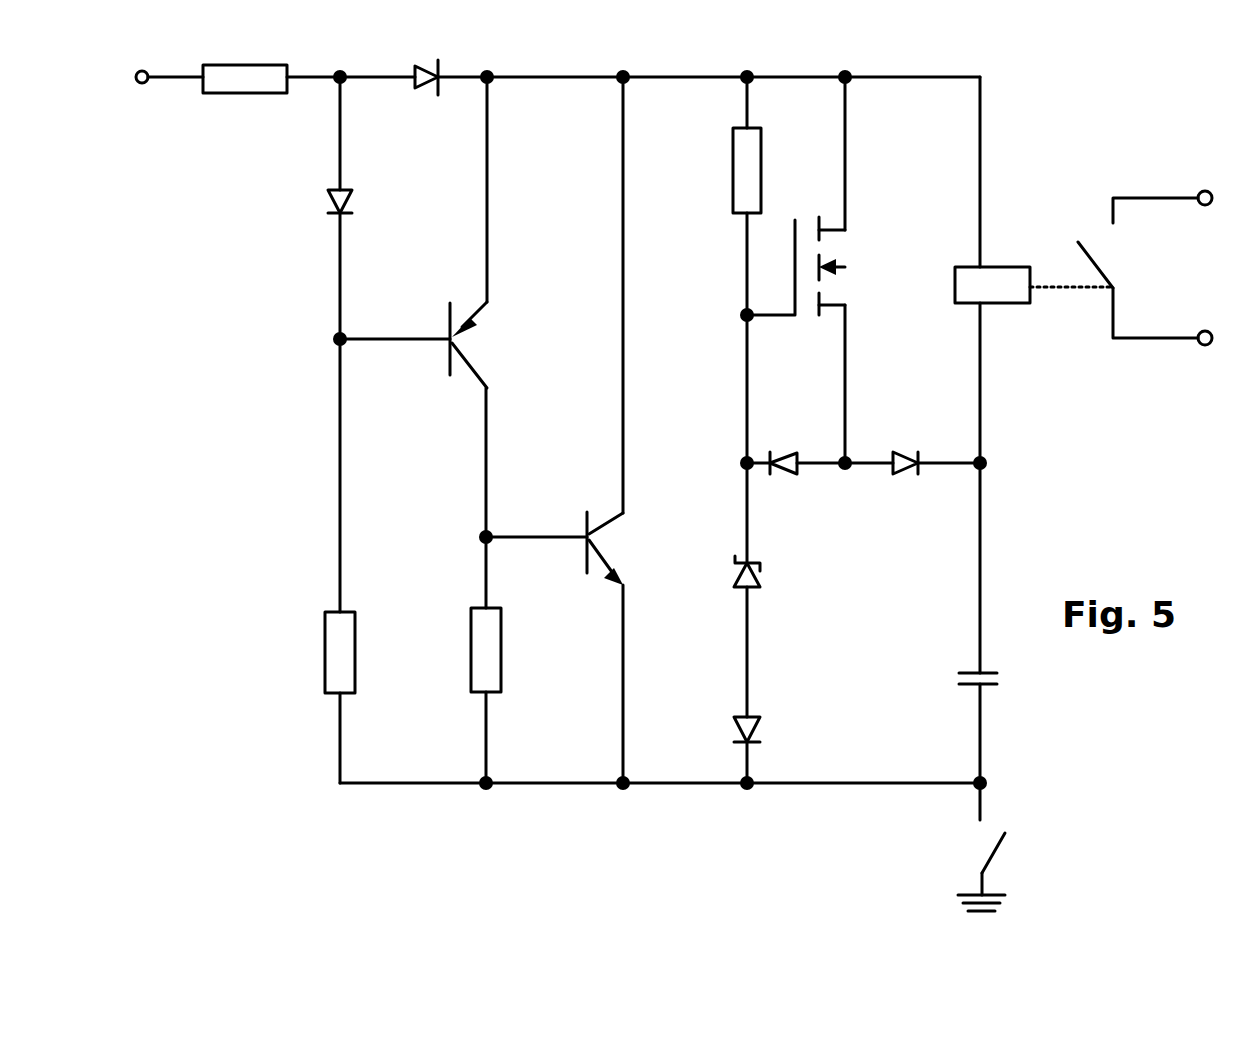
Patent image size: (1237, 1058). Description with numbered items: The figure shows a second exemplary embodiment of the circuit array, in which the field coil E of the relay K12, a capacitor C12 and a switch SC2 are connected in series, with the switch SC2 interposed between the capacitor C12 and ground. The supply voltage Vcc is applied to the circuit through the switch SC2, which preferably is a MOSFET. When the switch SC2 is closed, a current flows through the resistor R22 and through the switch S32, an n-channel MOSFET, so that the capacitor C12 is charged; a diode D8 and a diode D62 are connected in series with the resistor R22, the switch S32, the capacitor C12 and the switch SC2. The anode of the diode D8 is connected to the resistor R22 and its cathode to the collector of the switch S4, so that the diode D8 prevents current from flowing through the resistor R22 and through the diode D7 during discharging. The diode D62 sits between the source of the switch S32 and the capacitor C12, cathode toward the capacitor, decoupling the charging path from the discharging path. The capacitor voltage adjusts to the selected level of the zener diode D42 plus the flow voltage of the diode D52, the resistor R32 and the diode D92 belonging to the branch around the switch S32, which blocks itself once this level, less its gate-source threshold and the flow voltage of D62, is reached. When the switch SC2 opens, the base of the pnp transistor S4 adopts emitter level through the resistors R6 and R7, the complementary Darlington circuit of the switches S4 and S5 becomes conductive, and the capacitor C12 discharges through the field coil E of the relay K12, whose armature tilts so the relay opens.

The supply voltage Vcc is at (144, 108).
The resistor R22 is at (245, 101).
The diode D8 is at (414, 99).
The diode D7 is at (317, 203).
The switch S4 is at (432, 345).
The switch S5 is at (574, 548).
The resistor R6 is at (312, 652).
The resistor R7 is at (511, 650).
The resistor R32 is at (719, 170).
The switch S32 is at (823, 266).
The diode D92 is at (796, 490).
The diode D62 is at (912, 490).
The zener diode D42 is at (782, 573).
The diode D52 is at (779, 723).
The relay K12 is at (1083, 268).
The field coil E is at (1003, 287).
The capacitor C12 is at (947, 683).
The switch SC2 is at (958, 847).